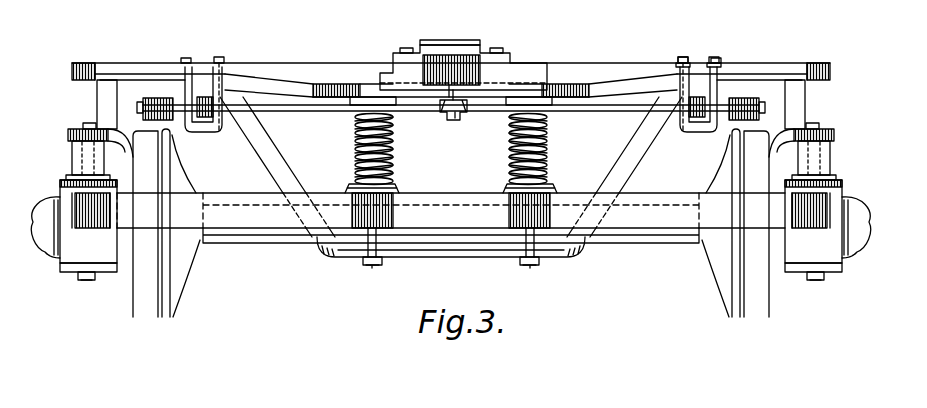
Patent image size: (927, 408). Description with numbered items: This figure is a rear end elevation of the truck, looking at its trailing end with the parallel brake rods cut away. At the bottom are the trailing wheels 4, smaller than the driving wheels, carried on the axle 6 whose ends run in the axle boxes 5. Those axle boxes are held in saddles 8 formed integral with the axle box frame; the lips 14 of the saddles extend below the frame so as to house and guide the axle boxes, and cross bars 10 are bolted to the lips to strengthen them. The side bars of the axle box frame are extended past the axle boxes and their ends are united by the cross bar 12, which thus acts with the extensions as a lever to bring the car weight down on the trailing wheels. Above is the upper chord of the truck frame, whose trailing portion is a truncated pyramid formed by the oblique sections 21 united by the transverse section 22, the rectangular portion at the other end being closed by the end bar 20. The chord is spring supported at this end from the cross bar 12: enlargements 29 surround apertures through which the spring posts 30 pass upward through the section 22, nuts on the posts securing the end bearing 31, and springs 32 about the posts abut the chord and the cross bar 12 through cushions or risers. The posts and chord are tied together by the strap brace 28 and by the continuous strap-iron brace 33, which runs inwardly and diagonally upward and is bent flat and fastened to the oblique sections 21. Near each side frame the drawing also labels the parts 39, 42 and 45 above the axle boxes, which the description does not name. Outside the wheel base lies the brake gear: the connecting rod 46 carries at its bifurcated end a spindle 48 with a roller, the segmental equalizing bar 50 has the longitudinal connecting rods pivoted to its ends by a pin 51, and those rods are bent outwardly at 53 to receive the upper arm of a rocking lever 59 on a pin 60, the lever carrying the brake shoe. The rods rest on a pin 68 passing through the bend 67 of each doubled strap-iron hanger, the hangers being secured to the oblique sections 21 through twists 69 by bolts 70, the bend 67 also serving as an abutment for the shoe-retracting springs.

The wheels 4 is at (449, 223).
The axle boxes 5 is at (50, 206).
The axle 6 is at (266, 243).
The saddles 8 is at (836, 179).
The cross bars 10 is at (453, 285).
The cross bar 12 is at (472, 187).
The lips 14 is at (451, 226).
The end bar 20 is at (318, 63).
The oblique sections 21 is at (268, 72).
The transverse section 22 is at (462, 85).
The strap brace 28 is at (96, 99).
The enlargements 29 is at (393, 215).
The spring posts 30 is at (390, 140).
The end bearing 31 is at (478, 50).
The springs 32 is at (355, 136).
The brace 33 is at (276, 140).
The pedestal cap 39 is at (68, 133).
The pedestal cylinder 42 is at (72, 153).
The curved arm 45 is at (128, 129).
The connecting rod 46 is at (457, 112).
The spindle 48 is at (452, 120).
The equalizing bar 50 is at (300, 114).
The pin 51 is at (200, 130).
The outwardly bent ends 53 is at (150, 99).
The rocking lever 59 is at (152, 131).
The pin 60 is at (137, 106).
The bend 67 is at (224, 62).
The pin 68 is at (218, 118).
The twists 69 is at (716, 57).
The bolts 70 is at (688, 63).